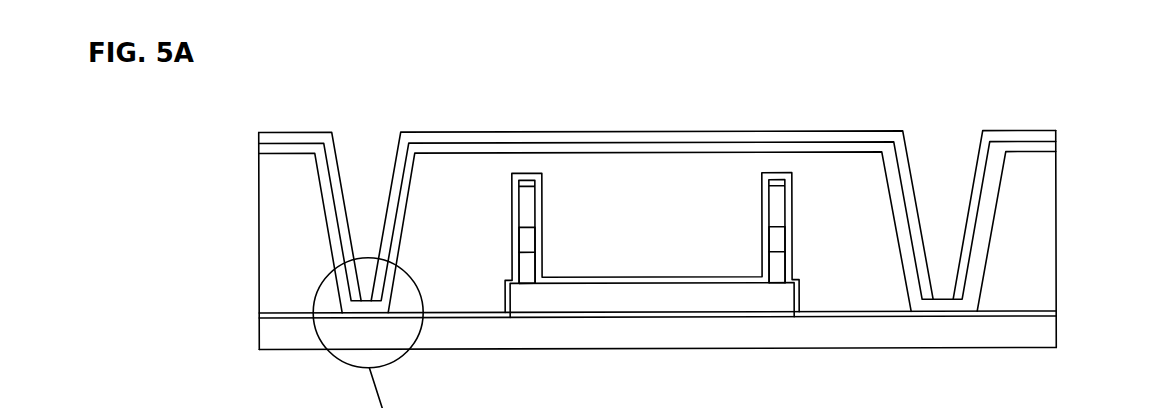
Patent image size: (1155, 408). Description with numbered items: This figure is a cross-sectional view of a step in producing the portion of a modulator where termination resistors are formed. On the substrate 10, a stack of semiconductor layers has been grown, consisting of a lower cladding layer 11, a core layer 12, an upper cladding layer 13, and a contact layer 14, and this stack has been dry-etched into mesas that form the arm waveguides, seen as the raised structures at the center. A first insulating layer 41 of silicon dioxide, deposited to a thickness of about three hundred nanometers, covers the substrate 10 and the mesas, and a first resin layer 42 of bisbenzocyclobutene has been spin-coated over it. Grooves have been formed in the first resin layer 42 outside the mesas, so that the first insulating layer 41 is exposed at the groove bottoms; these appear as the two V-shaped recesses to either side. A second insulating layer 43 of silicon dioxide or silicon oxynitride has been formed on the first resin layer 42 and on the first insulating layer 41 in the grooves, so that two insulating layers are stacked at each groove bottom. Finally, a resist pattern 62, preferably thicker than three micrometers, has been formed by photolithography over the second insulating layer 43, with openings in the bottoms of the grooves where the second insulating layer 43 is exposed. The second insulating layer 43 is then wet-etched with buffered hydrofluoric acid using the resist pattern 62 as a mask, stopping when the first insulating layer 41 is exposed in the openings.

The substrate 10 is at (1043, 328).
The lower cladding layer 11 is at (612, 293).
The core layer 12 is at (777, 240).
The upper cladding layer 13 is at (777, 212).
The contact layer 14 is at (766, 181).
The first insulating layer 41 is at (477, 311).
The first resin layer 42 is at (630, 173).
The second insulating layer 43 is at (545, 150).
The resist pattern 62 is at (471, 132).